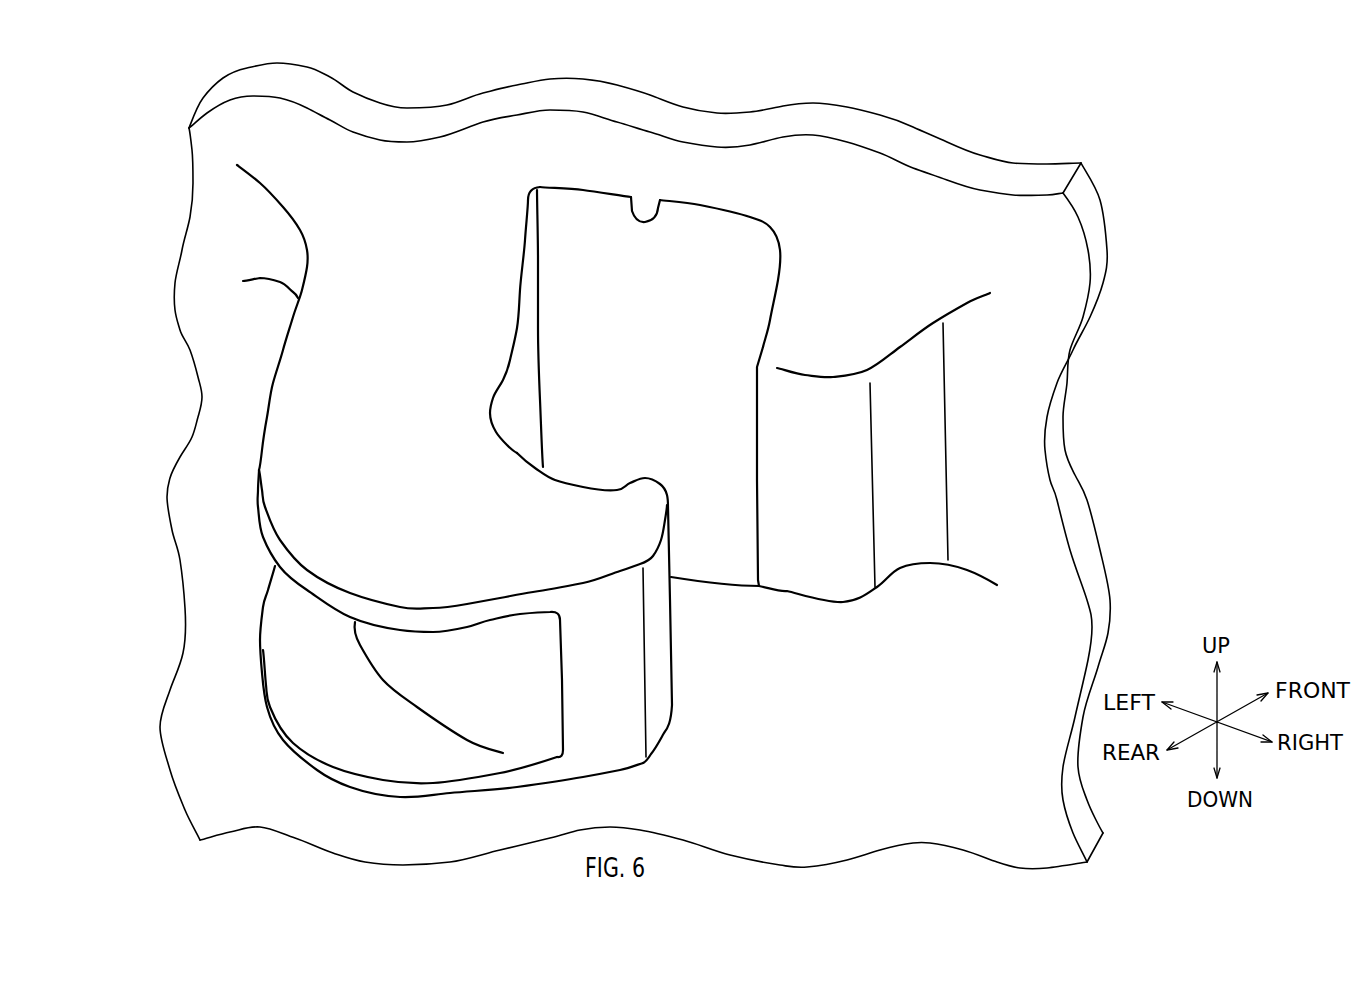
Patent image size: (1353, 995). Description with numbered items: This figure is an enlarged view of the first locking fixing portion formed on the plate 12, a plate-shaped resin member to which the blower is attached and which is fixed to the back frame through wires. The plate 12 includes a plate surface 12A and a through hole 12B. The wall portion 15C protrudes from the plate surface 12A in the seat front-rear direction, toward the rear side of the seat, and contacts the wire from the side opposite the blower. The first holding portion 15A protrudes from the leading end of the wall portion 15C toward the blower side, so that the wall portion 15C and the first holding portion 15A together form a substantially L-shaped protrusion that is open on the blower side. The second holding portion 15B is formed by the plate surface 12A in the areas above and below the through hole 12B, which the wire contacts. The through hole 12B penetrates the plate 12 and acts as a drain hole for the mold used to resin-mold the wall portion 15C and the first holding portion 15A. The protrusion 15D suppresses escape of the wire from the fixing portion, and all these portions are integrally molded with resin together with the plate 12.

The plate 12 is at (350, 115).
The plate surface 12A is at (210, 330).
The through hole 12B is at (631, 197).
The first holding portion 15A is at (610, 538).
The second holding portion 15B is at (770, 190).
The wall portion 15C is at (523, 328).
The protrusion 15D is at (863, 307).